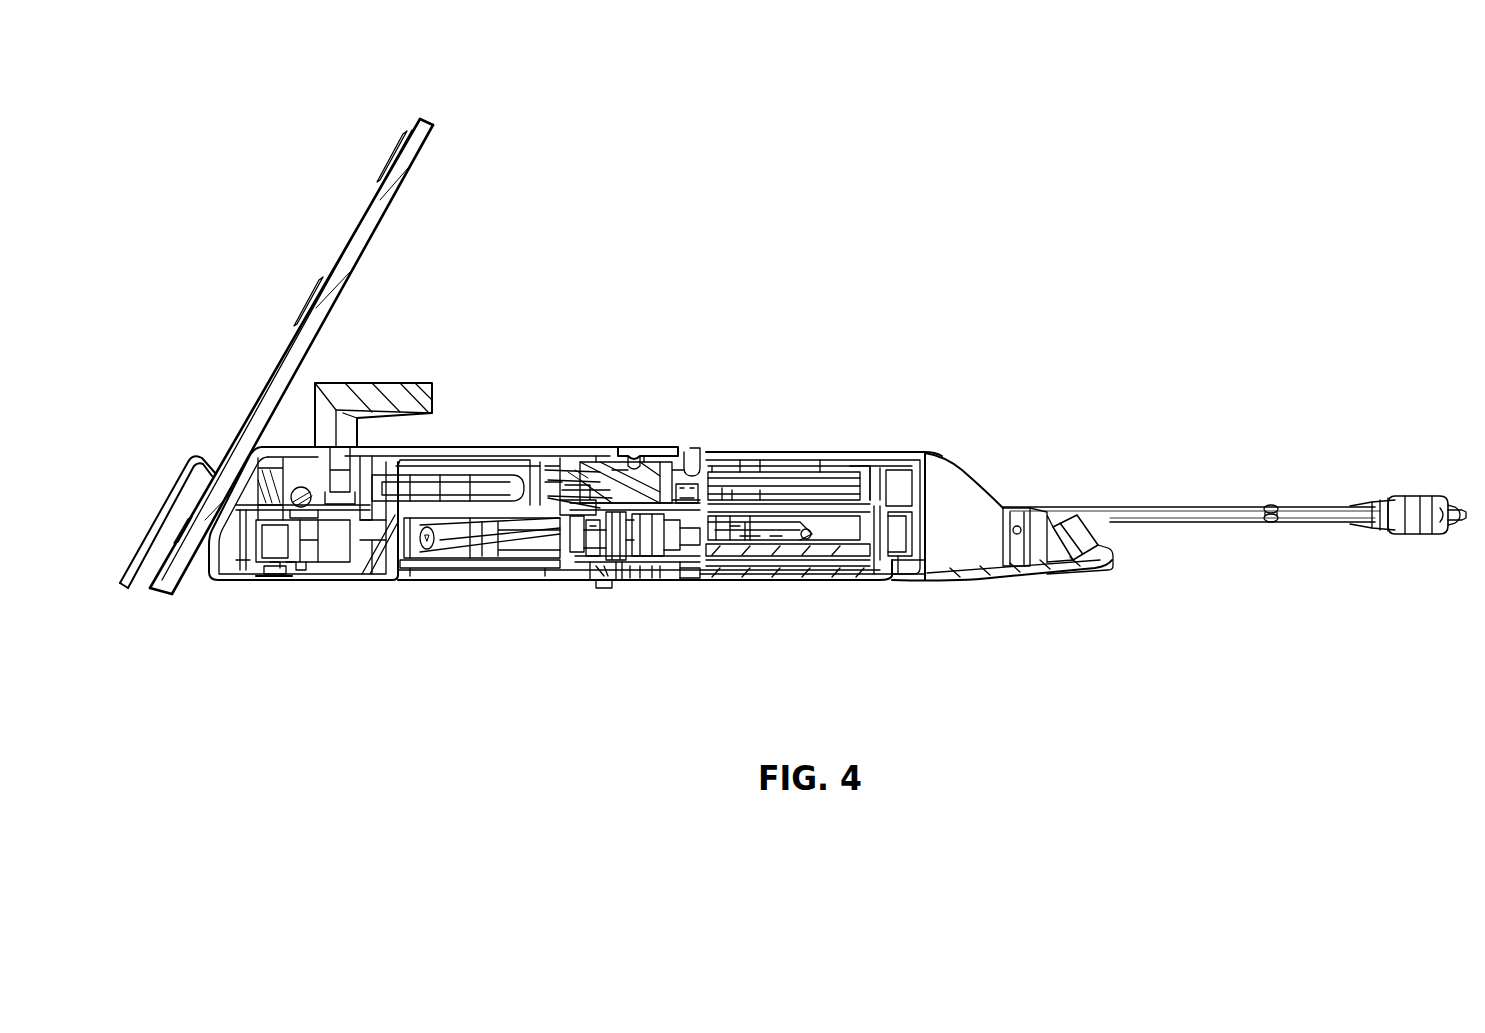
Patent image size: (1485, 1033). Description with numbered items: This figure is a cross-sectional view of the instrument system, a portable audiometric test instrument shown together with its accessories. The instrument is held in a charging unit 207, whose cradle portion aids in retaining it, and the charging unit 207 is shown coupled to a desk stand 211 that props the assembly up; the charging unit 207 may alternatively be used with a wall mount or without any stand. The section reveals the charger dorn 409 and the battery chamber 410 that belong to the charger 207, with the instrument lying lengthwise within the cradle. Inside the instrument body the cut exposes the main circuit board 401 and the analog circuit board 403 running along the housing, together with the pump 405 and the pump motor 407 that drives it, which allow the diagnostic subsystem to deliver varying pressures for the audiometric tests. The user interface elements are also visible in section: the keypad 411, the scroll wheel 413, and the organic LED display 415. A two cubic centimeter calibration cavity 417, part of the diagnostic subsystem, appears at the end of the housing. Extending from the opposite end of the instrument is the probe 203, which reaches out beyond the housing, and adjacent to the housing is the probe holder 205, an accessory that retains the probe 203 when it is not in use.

The desk stand 211 is at (362, 251).
The 2 cc calibration cavity 417 is at (260, 570).
The charging unit 207 is at (312, 578).
The charger dorn 409 is at (457, 484).
The battery chamber 410 is at (480, 548).
The pump motor 407 is at (635, 478).
The pump 405 is at (652, 558).
The keypad 411 is at (608, 582).
The scroll wheel 413 is at (652, 578).
The analog circuit board 403 is at (820, 508).
The main circuit board 401 is at (822, 512).
The organic LED display 415 is at (830, 542).
The probe holder 205 is at (1087, 570).
The probe 203 is at (1428, 533).